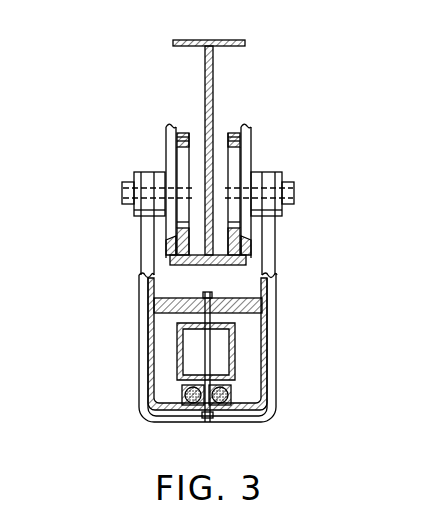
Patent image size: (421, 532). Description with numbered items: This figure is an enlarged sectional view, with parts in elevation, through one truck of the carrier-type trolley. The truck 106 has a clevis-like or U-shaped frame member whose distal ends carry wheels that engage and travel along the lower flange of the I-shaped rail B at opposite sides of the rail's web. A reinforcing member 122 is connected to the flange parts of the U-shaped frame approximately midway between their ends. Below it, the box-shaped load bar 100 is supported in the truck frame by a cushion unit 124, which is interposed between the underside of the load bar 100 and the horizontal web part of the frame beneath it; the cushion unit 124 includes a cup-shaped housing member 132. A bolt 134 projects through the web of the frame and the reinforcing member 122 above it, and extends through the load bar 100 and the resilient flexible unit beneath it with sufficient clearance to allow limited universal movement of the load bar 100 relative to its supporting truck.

The I-shaped rail B is at (243, 38).
The load bar 100 is at (172, 128).
The truck 106 is at (139, 258).
The reinforcing member 122 is at (194, 298).
The bolt 134 is at (205, 353).
The cushion unit 124 is at (178, 395).
The cup-shaped housing member 132 is at (232, 393).